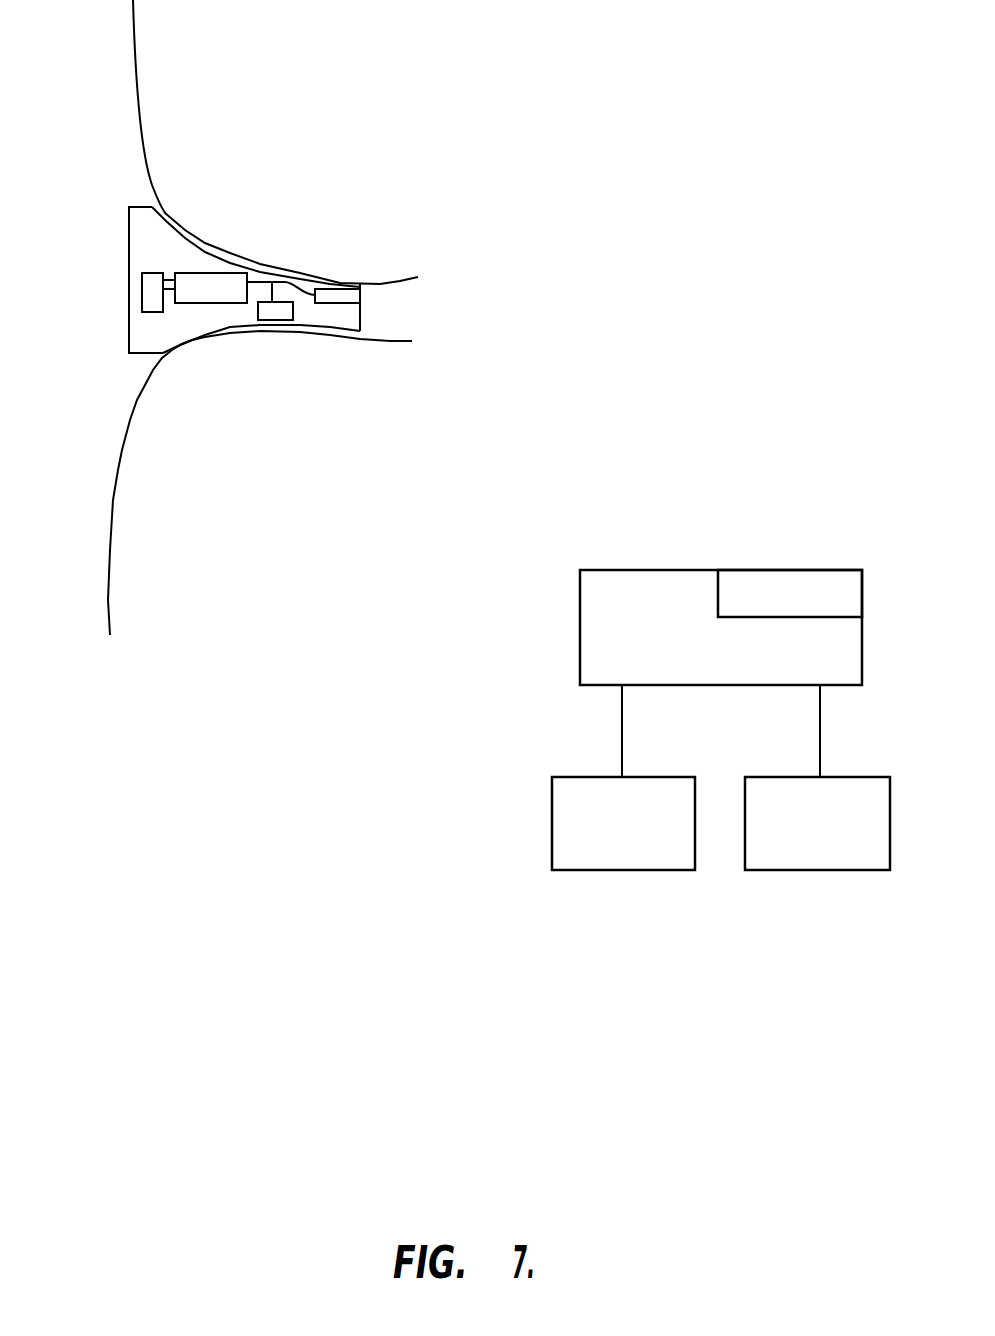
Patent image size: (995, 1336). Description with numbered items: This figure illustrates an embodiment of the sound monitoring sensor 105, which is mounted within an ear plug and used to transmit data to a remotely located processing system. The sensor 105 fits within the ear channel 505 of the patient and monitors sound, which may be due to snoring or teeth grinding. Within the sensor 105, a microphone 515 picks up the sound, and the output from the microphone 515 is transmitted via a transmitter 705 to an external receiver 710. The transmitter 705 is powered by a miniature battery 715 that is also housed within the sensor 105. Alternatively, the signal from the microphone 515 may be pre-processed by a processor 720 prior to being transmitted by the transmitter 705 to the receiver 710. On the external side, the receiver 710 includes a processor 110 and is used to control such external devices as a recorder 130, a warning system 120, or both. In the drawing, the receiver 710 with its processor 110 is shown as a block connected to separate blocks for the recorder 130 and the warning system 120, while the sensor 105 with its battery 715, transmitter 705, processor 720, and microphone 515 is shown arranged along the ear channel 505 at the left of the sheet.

The sensor 105 is at (102, 193).
The ear channel 505 is at (408, 278).
The miniature battery 715 is at (155, 271).
The transmitter 705 is at (205, 292).
The processor 720 is at (279, 312).
The microphone 515 is at (335, 290).
The receiver 710 is at (588, 588).
The processor 110 is at (780, 578).
The recorder 130 is at (667, 777).
The warning system 120 is at (857, 777).